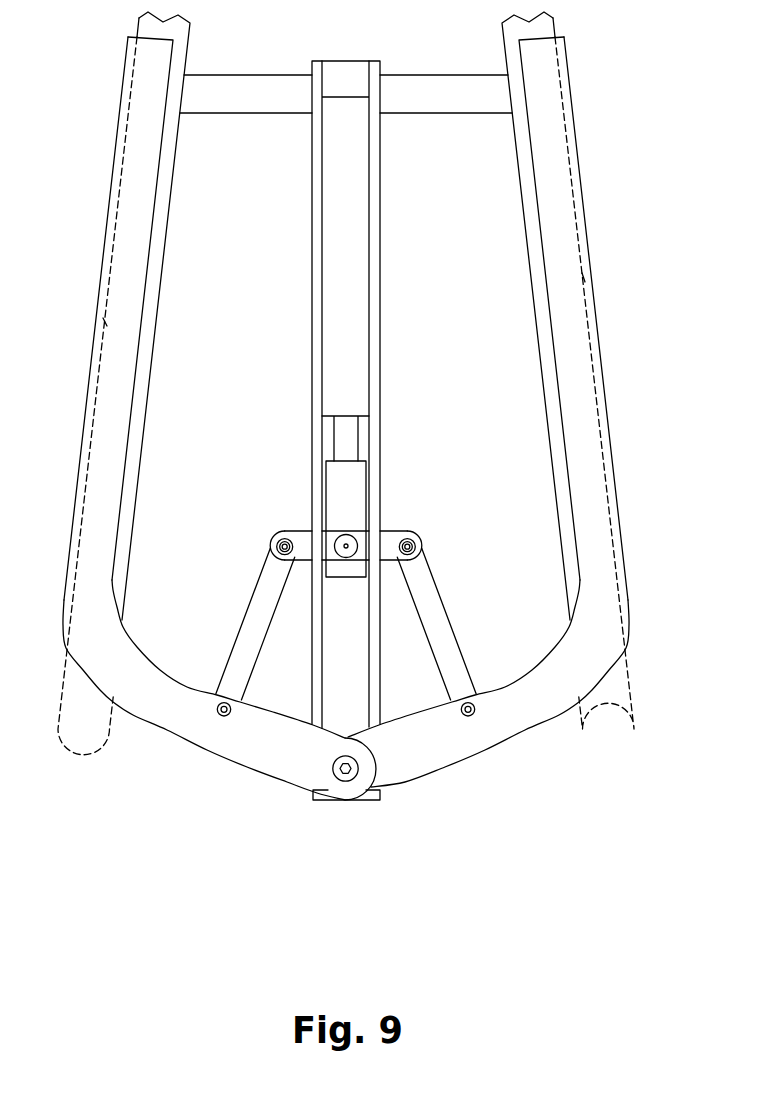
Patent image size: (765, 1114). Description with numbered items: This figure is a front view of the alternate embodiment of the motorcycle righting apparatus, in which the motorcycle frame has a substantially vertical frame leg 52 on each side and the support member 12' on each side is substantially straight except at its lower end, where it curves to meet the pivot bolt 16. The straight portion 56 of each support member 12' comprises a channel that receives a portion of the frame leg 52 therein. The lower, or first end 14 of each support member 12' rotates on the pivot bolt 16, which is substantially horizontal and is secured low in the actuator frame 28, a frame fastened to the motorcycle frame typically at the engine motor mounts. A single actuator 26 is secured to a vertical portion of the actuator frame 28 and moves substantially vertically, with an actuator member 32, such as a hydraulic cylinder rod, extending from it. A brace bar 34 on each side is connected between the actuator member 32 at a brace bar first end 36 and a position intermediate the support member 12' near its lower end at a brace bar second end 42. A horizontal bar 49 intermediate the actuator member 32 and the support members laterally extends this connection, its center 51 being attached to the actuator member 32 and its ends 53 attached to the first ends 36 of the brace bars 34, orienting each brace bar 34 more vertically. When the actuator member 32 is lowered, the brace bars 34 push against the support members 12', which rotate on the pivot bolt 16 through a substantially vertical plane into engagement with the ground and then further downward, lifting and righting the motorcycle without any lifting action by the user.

The support member 12' is at (357, 316).
The first end 14 is at (215, 745).
The pivot bolt 16 is at (345, 777).
The actuator 26 is at (335, 165).
The actuator frame 28 is at (313, 247).
The actuator member 32 is at (345, 572).
The brace bar 34 is at (252, 610).
The brace bar first end 36 is at (278, 557).
The brace bar second end 42 is at (222, 688).
The horizontal bar 49 is at (305, 530).
The center 51 is at (346, 534).
The frame leg 52 is at (147, 352).
The ends 53 is at (280, 533).
The straight portion 56 is at (113, 322).